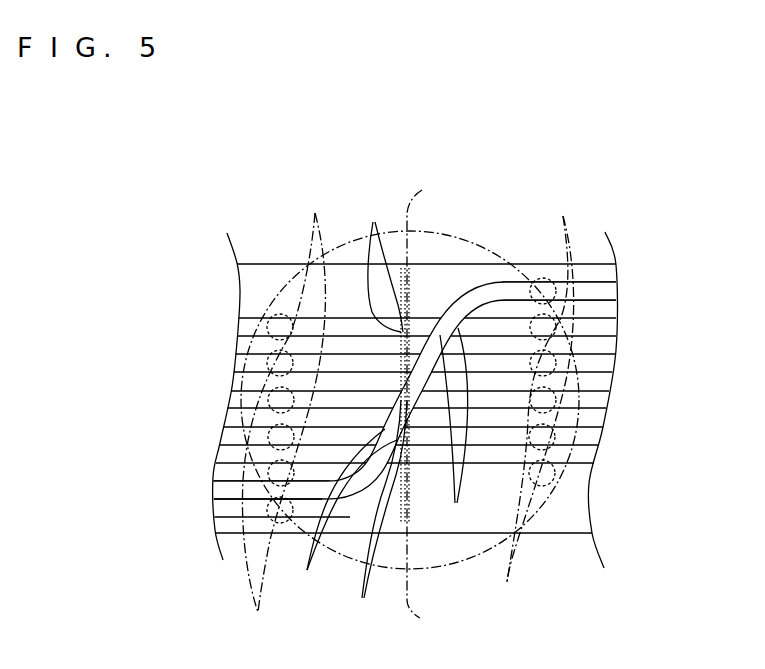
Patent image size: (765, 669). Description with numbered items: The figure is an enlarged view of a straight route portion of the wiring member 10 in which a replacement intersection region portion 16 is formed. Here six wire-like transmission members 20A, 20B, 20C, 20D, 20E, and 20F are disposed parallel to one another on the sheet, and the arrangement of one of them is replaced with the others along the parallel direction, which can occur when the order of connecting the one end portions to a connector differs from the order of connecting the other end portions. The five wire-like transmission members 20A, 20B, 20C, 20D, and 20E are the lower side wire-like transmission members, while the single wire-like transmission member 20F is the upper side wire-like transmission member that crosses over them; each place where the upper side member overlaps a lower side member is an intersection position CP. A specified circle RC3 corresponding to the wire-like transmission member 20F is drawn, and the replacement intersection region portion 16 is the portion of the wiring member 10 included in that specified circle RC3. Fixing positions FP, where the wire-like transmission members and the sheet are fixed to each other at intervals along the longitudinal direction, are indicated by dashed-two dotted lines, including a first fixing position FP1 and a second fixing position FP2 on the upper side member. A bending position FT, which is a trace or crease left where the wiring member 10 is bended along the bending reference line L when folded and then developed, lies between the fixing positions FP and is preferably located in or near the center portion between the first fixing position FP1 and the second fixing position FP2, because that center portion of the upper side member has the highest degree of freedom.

The wiring member 10 is at (246, 148).
The replacement intersection region portion 16 is at (447, 293).
The wire-like transmission member 20A is at (577, 473).
The wire-like transmission member 20B is at (590, 402).
The wire-like transmission member 20C is at (600, 330).
The wire-like transmission member 20D is at (597, 367).
The wire-like transmission member 20E is at (583, 437).
The wire-like transmission member 20F is at (608, 292).
The fixing position FP is at (411, 401).
The first fixing position FP1 is at (283, 427).
The second fixing position FP2 is at (567, 388).
The bending position FT is at (378, 414).
The intersection position CP is at (380, 463).
The bending reference line L is at (418, 408).
The specified circle RC3 is at (447, 575).